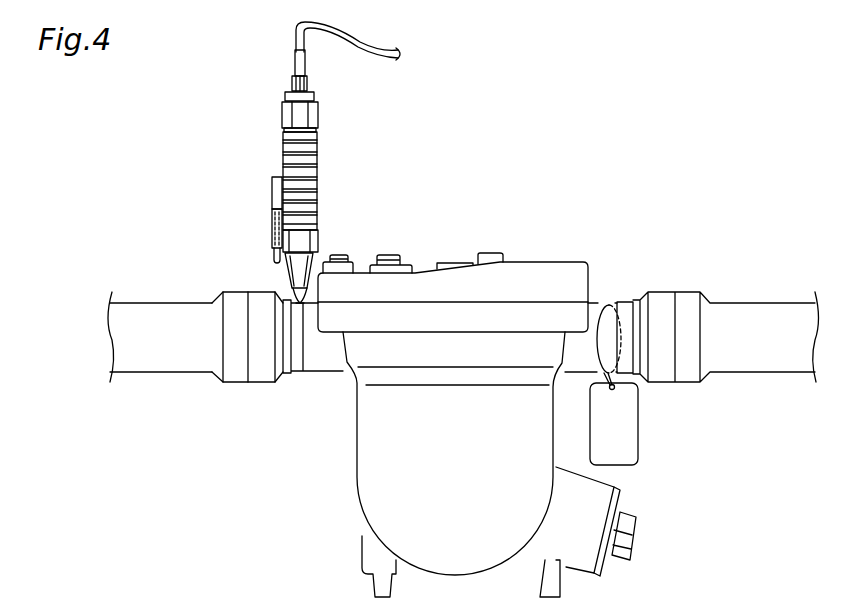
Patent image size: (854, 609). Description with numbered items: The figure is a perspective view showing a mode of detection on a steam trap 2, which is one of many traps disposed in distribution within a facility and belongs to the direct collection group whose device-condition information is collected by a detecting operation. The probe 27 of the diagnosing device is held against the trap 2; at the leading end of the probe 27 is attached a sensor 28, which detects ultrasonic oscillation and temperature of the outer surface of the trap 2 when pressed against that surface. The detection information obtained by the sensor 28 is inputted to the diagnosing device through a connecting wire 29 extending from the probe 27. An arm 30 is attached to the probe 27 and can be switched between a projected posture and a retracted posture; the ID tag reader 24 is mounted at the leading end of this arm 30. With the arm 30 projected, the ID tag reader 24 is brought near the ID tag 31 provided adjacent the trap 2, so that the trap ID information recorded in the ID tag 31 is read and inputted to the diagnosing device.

The steam trap 2 is at (618, 279).
The ID tag reader 24 is at (273, 257).
The probe 27 is at (331, 170).
The sensor 28 is at (297, 303).
The connecting wire 29 is at (348, 50).
The arm 30 is at (272, 192).
The ID tag 31 is at (638, 428).